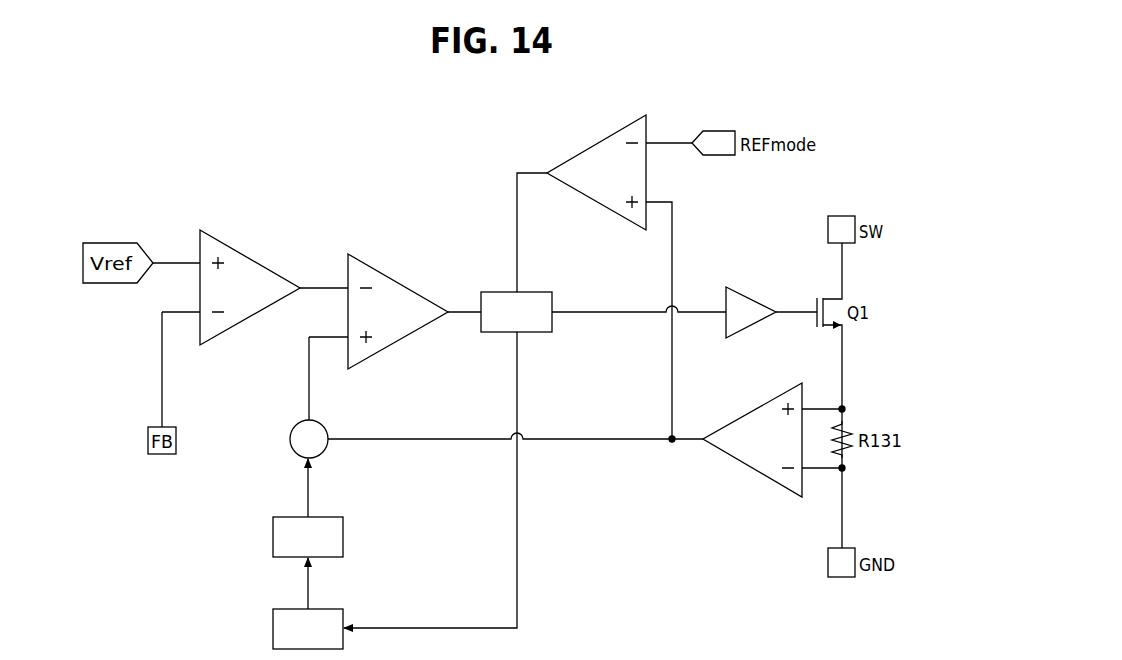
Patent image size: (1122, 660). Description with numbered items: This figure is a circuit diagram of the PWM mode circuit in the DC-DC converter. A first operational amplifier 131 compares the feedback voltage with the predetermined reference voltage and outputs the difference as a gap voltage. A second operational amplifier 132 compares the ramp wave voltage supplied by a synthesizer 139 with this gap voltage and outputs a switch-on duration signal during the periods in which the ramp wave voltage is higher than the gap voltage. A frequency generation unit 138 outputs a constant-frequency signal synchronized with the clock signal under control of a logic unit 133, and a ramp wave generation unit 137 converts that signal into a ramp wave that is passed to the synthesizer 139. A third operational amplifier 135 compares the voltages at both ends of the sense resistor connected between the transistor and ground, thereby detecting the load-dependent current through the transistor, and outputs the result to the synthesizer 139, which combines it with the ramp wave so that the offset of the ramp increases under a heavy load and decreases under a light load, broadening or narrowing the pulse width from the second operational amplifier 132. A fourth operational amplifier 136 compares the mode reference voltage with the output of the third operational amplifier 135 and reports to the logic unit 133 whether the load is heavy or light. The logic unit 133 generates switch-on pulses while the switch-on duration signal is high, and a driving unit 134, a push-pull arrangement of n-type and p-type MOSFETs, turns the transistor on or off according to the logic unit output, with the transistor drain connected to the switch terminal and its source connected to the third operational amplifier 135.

The first operational amplifier 131 is at (250, 287).
The second operational amplifier 132 is at (398, 311).
The logic unit 133 is at (516, 312).
The driving unit 134 is at (751, 312).
The third operational amplifier 135 is at (752, 440).
The fourth operational amplifier 136 is at (596, 172).
The ramp wave generation unit 137 is at (308, 537).
The frequency generation unit 138 is at (308, 629).
The synthesizer 139 is at (324, 427).